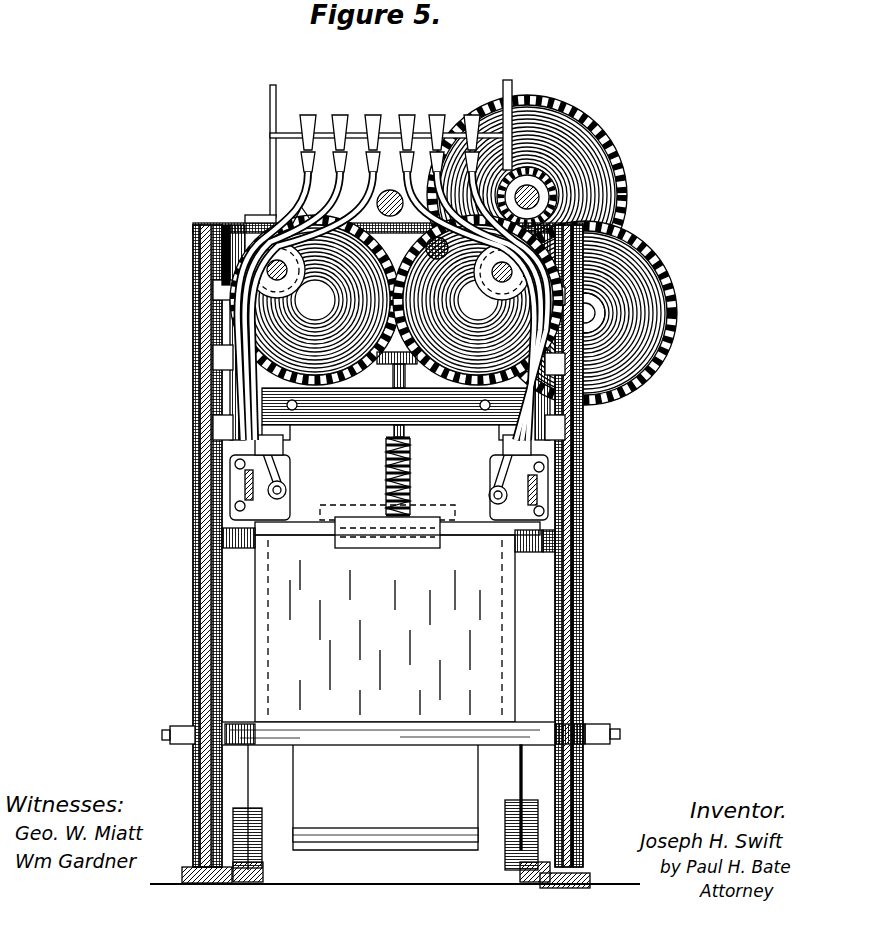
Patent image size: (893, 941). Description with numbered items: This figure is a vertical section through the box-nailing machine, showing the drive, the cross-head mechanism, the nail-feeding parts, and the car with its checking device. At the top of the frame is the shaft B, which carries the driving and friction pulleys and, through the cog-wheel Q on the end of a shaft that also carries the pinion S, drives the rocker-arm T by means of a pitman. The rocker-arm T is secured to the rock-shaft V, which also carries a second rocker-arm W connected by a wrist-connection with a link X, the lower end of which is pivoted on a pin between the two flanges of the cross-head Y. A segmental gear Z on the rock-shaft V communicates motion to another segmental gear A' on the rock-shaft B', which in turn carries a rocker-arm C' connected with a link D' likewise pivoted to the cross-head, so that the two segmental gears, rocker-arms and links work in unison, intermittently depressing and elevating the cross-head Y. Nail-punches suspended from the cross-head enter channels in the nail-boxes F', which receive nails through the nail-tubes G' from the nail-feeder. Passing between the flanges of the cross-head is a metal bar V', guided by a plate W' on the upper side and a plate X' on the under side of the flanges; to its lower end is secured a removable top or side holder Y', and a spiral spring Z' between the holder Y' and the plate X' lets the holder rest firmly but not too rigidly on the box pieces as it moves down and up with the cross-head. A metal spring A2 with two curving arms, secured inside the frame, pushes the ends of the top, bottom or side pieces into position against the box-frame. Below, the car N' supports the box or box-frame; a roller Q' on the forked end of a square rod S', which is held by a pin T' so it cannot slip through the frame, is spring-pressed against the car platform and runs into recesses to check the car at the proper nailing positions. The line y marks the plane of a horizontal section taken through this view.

The shaft B is at (378, 142).
The nail-tubes G' is at (393, 264).
The cog-wheel Q is at (527, 195).
The pinion S is at (527, 191).
The rocker-arm T is at (303, 214).
The rock-shaft V is at (186, 546).
The rocker-arm W is at (183, 332).
The link X is at (168, 338).
The segmental gear Z is at (315, 300).
The segmental gear A' is at (478, 300).
The rock-shaft B' is at (389, 271).
The plate W' is at (382, 367).
The bar or rod V' is at (404, 375).
The cross-head Y is at (394, 414).
The plate X' is at (417, 440).
The spiral spring Z' is at (382, 476).
The top or side holder Y' is at (397, 514).
The nail-boxes F' is at (389, 477).
The rocker-arm C' is at (657, 326).
The link D' is at (607, 323).
The line y y is at (545, 530).
The metal spring A2 is at (180, 628).
The car N' is at (388, 744).
The rod or bar S' is at (398, 735).
The pin T' is at (390, 734).
The roller Q' is at (389, 813).